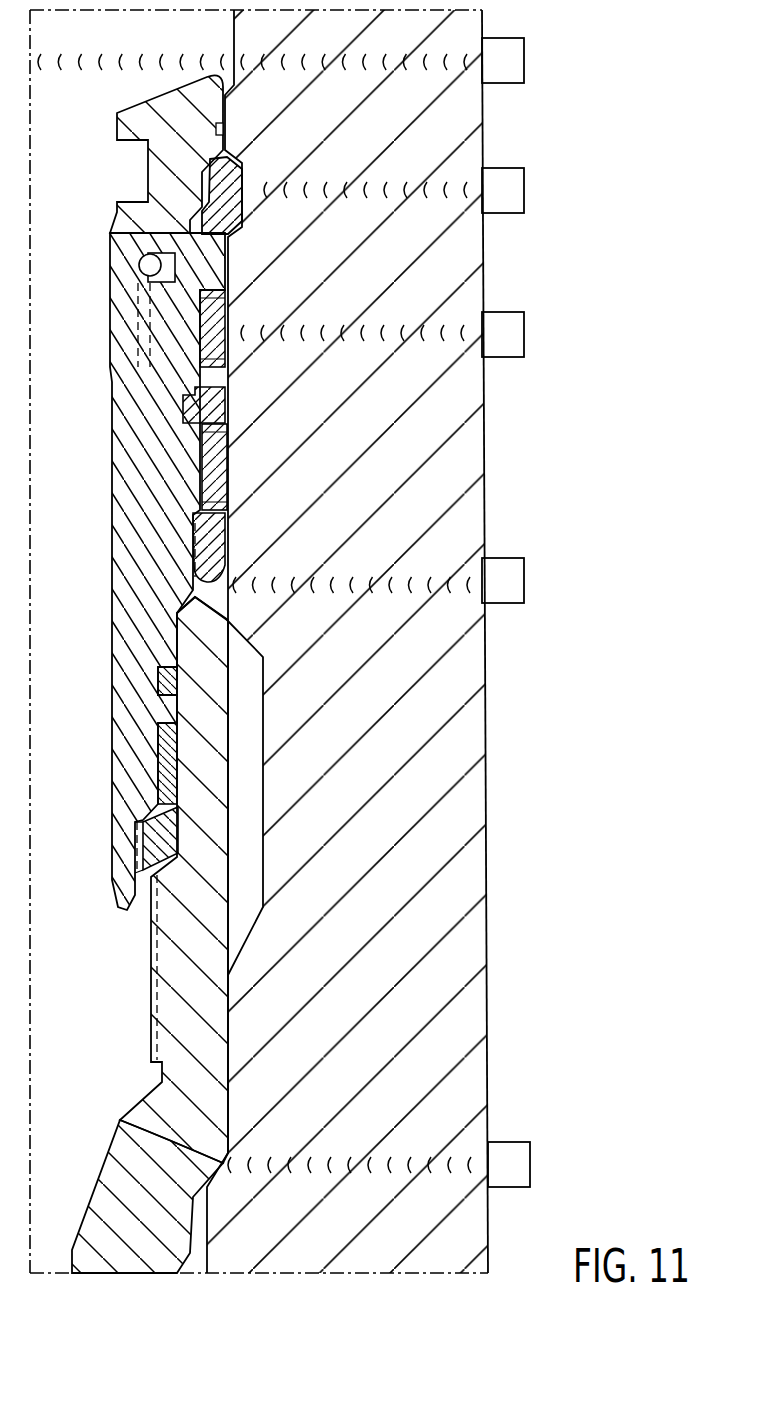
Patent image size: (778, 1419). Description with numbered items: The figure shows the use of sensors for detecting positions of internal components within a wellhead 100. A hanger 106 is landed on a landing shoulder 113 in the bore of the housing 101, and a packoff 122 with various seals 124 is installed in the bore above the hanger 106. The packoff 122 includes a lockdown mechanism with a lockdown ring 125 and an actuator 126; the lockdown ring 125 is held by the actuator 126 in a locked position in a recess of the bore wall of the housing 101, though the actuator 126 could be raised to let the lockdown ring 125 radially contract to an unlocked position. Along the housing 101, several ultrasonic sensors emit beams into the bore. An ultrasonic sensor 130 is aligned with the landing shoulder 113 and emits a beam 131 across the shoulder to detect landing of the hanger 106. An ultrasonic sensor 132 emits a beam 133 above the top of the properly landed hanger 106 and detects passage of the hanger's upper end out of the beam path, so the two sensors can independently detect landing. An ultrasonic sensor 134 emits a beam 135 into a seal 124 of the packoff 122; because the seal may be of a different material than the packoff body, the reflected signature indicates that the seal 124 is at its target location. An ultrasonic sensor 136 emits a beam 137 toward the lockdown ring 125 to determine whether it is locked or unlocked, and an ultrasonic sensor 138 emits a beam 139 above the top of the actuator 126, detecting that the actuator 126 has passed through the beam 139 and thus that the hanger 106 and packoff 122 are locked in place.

The wellhead 100 is at (340, 641).
The housing 101 is at (461, 932).
The hanger 106 is at (178, 973).
The landing shoulder 113 is at (128, 1118).
The packoff 122 is at (133, 443).
The seals 124 is at (205, 457).
The lockdown ring 125 is at (223, 188).
The actuator 126 is at (128, 116).
The ultrasonic sensor 130 is at (530, 1163).
The beam 131 is at (455, 1165).
The ultrasonic sensor 132 is at (524, 580).
The beam 133 is at (452, 583).
The ultrasonic sensor 134 is at (524, 334).
The beam 135 is at (452, 333).
The ultrasonic sensor 136 is at (524, 190).
The beam 137 is at (452, 190).
The ultrasonic sensor 138 is at (524, 61).
The beam 139 is at (452, 60).